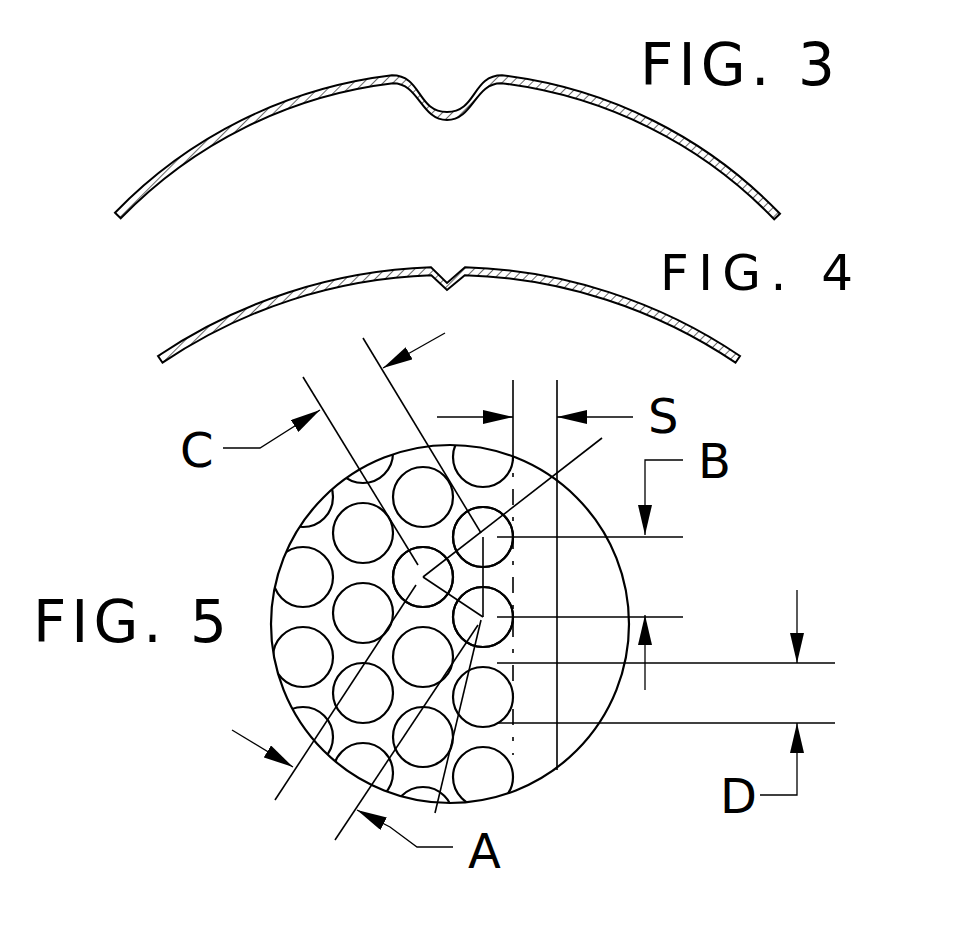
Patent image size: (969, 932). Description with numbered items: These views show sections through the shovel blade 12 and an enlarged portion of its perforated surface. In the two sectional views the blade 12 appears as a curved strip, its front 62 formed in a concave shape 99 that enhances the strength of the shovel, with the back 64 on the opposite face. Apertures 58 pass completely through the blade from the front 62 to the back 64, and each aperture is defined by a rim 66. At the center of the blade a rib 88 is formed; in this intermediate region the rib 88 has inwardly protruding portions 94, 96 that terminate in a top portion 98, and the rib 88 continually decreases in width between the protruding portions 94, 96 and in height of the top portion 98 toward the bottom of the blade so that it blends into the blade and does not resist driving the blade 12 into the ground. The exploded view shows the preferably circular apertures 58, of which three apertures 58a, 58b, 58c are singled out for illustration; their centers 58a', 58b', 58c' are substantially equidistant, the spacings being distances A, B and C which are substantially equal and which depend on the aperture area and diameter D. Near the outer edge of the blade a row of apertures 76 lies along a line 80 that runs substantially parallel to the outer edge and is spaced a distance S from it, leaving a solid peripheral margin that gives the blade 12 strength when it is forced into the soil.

In FIG. 3, the shovel blade 12 is at (740, 163).
In FIG. 4, the shovel blade 12 is at (449, 290).
In FIG. 3, the apertures 58 is at (198, 143).
In FIG. 4, the apertures 58 is at (213, 323).
In FIG. 5, the aperture 58a is at (293, 533).
In FIG. 5, the center of aperture 58a' is at (310, 567).
In FIG. 5, the aperture 58b is at (536, 754).
In FIG. 5, the center of aperture 58b' is at (668, 585).
In FIG. 5, the aperture 58c is at (482, 454).
In FIG. 5, the center of aperture 58c' is at (629, 484).
In FIG. 3, the front of the shovel blade 62 is at (136, 239).
In FIG. 4, the front of the shovel blade 62 is at (187, 337).
In FIG. 3, the back of the shovel blade 64 is at (150, 183).
In FIG. 4, the back of the shovel blade 64 is at (185, 336).
In FIG. 3, the rim 66 is at (177, 170).
In FIG. 4, the rim 66 is at (237, 310).
In FIG. 5, the rim 66 is at (330, 617).
In FIG. 5, the row of apertures 76 is at (516, 792).
In FIG. 5, the line 80 is at (537, 750).
In FIG. 3, the rib 88 is at (483, 93).
In FIG. 4, the rib 88 is at (458, 275).
In FIG. 3, the inwardly protruding portion 94 is at (480, 95).
In FIG. 4, the inwardly protruding portion 94 is at (497, 242).
In FIG. 3, the inwardly protruding portion 96 is at (402, 92).
In FIG. 4, the inwardly protruding portion 96 is at (433, 272).
In FIG. 3, the top portion of the rib 98 is at (447, 108).
In FIG. 4, the top portion of the rib 98 is at (445, 277).
In FIG. 3, the concave shape 99 is at (732, 177).
In FIG. 4, the concave shape 99 is at (256, 315).